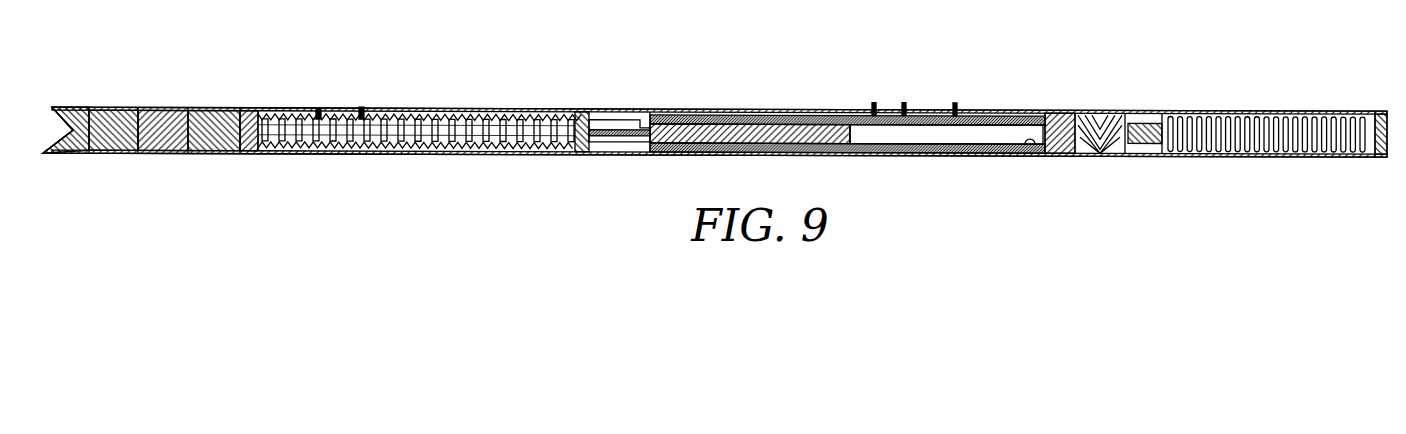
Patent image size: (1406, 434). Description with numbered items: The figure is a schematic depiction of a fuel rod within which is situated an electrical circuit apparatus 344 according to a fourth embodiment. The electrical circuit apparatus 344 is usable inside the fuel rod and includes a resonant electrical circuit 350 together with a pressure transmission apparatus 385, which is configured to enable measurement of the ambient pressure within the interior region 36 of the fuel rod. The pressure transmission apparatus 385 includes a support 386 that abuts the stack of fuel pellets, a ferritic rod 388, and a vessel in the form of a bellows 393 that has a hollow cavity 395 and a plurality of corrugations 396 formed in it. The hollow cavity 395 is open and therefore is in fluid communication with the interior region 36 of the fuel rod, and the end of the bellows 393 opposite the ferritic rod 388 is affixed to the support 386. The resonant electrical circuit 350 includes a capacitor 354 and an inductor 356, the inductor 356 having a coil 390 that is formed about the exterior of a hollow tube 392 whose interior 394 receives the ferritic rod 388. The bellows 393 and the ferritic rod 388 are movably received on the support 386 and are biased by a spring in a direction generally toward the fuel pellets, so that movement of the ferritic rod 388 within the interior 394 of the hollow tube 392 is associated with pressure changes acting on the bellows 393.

The interior region 36 is at (627, 146).
The electrical circuit apparatus 344 is at (875, 97).
The resonant electrical circuit 350 is at (905, 97).
The capacitor 354 is at (1110, 107).
The inductor 356 is at (953, 99).
The pressure transmission apparatus 385 is at (311, 114).
The support 386 is at (248, 104).
The ferritic rod 388 is at (112, 138).
The coil 390 is at (888, 154).
The hollow tube 392 is at (1053, 144).
The bellows 393 is at (362, 116).
The interior 394 is at (922, 155).
The hollow cavity 395 is at (515, 106).
The corrugations 396 is at (413, 104).